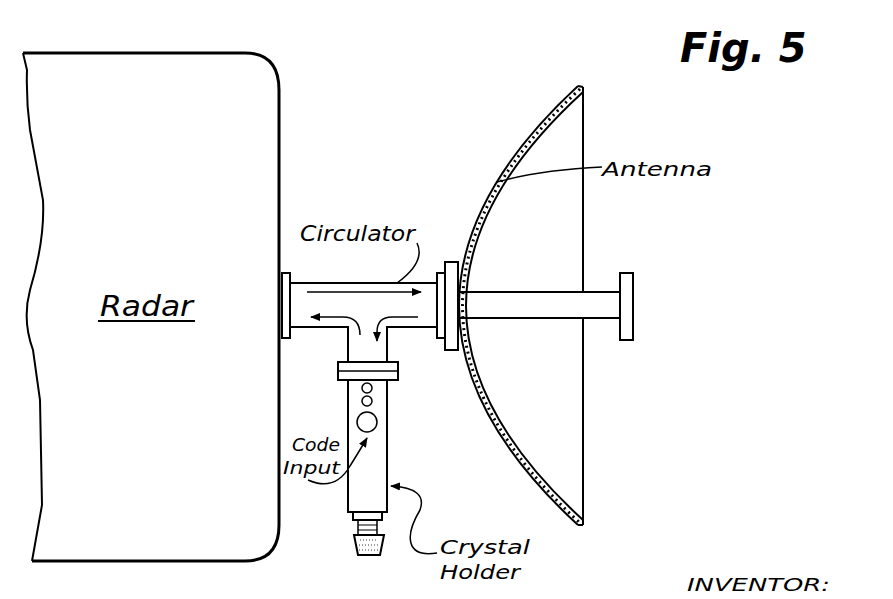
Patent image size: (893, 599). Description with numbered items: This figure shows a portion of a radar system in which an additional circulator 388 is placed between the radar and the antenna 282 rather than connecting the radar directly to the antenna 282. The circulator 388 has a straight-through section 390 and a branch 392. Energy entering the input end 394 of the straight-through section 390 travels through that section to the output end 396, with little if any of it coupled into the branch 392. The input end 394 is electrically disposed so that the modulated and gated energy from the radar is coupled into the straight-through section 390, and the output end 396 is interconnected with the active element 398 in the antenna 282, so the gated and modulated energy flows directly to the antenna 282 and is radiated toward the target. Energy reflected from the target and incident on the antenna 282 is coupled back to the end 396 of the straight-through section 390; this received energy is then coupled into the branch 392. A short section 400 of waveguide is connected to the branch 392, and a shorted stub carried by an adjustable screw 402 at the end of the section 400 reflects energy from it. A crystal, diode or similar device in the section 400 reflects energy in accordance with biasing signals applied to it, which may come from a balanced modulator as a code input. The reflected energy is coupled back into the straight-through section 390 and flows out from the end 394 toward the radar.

The antenna 282 is at (596, 424).
The circulator 388 is at (314, 281).
The straight-through section 390 is at (362, 283).
The branch 392 is at (390, 347).
The input end 394 is at (285, 272).
The output end 396 is at (435, 270).
The active element 398 is at (633, 290).
The short section of waveguide 400 is at (389, 455).
The adjustable screw 402 is at (362, 557).